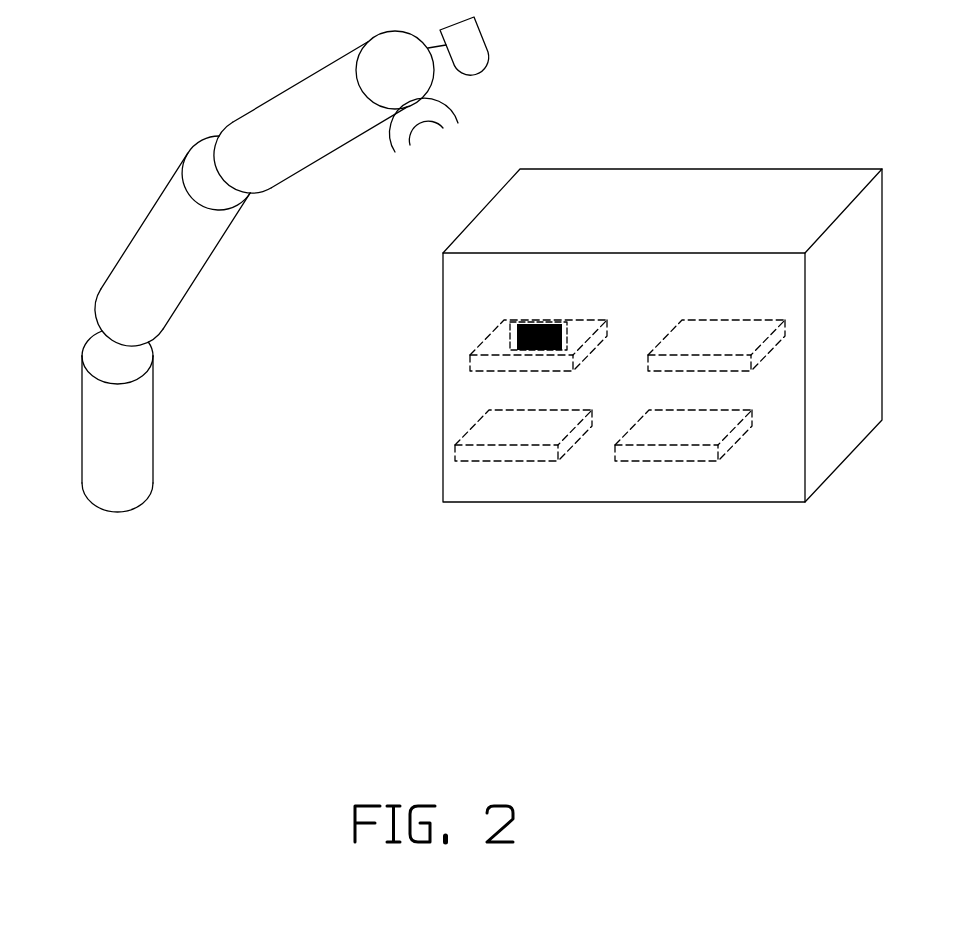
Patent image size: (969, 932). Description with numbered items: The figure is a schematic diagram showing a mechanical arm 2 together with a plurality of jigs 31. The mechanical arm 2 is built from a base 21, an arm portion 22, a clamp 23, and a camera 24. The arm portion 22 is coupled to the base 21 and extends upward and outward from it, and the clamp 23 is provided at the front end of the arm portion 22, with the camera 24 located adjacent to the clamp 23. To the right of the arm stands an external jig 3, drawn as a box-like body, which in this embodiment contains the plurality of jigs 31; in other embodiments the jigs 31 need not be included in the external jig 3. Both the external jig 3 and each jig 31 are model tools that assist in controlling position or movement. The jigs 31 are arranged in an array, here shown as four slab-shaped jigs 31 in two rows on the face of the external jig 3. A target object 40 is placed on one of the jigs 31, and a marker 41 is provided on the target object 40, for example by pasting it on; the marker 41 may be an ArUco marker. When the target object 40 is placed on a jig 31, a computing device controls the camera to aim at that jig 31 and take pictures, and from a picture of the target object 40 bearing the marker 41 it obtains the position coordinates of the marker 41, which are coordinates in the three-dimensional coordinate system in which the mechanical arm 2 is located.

The mechanical arm 2 is at (138, 268).
The base 21 is at (93, 458).
The arm portion 22 is at (214, 137).
The clamp 23 is at (447, 118).
The camera 24 is at (470, 48).
The external jig 3 is at (678, 182).
The jig 31 is at (588, 323).
The target object 40 is at (512, 335).
The marker 41 is at (542, 323).